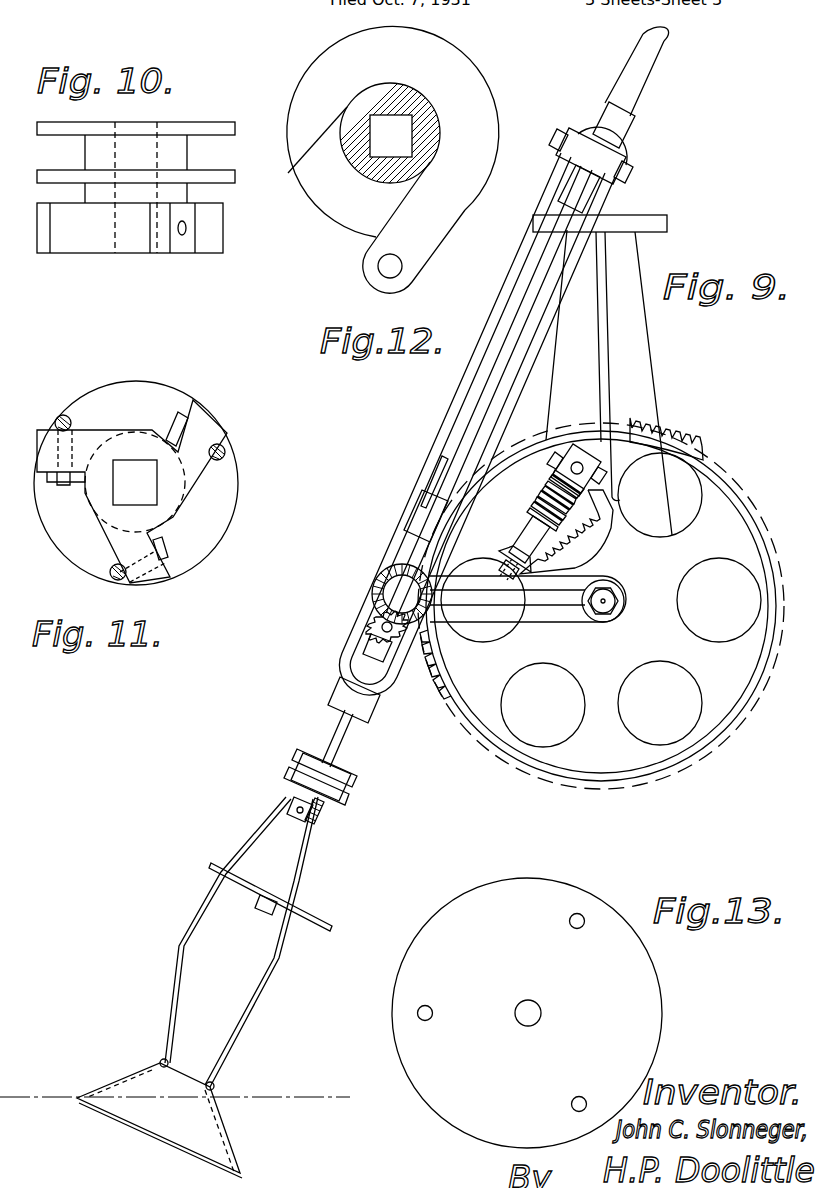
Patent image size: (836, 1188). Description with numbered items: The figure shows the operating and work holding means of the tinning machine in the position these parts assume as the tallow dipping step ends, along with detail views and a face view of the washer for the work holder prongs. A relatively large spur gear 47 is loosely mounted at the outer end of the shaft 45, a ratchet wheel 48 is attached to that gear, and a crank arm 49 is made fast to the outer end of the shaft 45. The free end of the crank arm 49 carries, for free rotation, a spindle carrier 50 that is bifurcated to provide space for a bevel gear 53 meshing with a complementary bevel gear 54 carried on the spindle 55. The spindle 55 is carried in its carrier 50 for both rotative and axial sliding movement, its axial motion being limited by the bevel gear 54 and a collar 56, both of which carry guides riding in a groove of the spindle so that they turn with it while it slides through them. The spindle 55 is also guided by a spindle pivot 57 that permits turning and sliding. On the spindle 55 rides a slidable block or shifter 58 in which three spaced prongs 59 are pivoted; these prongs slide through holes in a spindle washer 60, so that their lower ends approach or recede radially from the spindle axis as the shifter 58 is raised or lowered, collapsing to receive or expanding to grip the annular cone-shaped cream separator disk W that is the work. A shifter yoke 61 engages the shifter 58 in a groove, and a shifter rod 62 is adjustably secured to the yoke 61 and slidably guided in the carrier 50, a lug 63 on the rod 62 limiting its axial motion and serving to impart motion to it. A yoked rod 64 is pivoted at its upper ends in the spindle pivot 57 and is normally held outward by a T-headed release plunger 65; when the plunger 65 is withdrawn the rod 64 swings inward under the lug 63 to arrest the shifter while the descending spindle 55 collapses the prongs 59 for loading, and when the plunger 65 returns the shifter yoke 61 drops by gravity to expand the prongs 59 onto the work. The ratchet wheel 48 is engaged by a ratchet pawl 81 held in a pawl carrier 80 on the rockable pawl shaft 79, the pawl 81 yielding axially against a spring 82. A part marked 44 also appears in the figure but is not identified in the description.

In FIG. 9, the bracket arm 44 is at (643, 375).
In FIG. 9, the shaft 45 is at (609, 606).
In FIG. 9, the spur gear 47 is at (678, 436).
In FIG. 9, the ratchet wheel 48 is at (576, 543).
In FIG. 9, the crank arm 49 is at (537, 618).
In FIG. 9, the spindle carrier 50 is at (413, 535).
In FIG. 9, the bevel gear 53 is at (377, 592).
In FIG. 9, the bevel gear 54 is at (372, 615).
In FIG. 9, the spindle 55 is at (487, 388).
In FIG. 9, the collar 56 is at (340, 693).
In FIG. 9, the spindle pivot 57 is at (610, 153).
In FIG. 10, the slidable block or shifter 58 is at (185, 193).
In FIG. 12, the slidable block or shifter 58 is at (342, 217).
In FIG. 11, the slidable block or shifter 58 is at (228, 480).
In FIG. 9, the slidable block or shifter 58 is at (332, 816).
In FIG. 11, the prongs 59 is at (218, 444).
In FIG. 9, the prongs 59 is at (262, 979).
In FIG. 9, the spindle washer 60 is at (212, 860).
In FIG. 13, the spindle washer 60 is at (655, 988).
In FIG. 12, the shifter yoke 61 is at (465, 72).
In FIG. 9, the shifter yoke 61 is at (346, 786).
In FIG. 9, the shifter rod 62 is at (343, 720).
In FIG. 9, the lug 63 is at (377, 628).
In FIG. 9, the yoked rod 64 is at (432, 450).
In FIG. 9, the T-headed release plunger 65 is at (665, 213).
In FIG. 9, the pawl shaft 79 is at (582, 450).
In FIG. 9, the pawl carrier 80 is at (563, 467).
In FIG. 9, the ratchet pawl 81 is at (507, 523).
In FIG. 9, the spring 82 is at (538, 493).
In FIG. 9, the annular cone-shaped disk W is at (131, 1117).